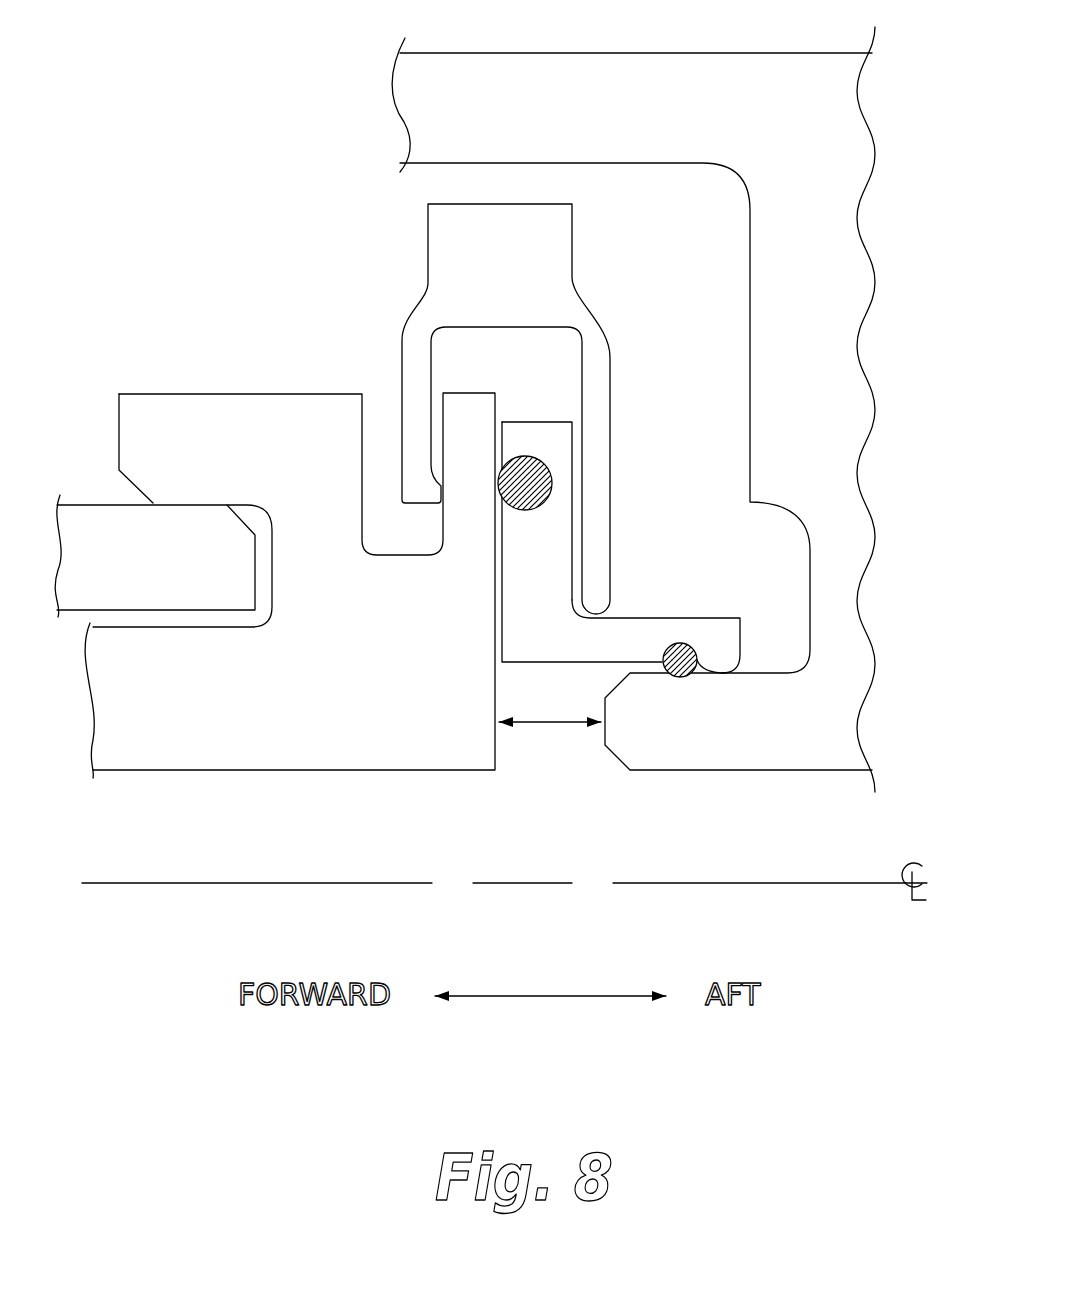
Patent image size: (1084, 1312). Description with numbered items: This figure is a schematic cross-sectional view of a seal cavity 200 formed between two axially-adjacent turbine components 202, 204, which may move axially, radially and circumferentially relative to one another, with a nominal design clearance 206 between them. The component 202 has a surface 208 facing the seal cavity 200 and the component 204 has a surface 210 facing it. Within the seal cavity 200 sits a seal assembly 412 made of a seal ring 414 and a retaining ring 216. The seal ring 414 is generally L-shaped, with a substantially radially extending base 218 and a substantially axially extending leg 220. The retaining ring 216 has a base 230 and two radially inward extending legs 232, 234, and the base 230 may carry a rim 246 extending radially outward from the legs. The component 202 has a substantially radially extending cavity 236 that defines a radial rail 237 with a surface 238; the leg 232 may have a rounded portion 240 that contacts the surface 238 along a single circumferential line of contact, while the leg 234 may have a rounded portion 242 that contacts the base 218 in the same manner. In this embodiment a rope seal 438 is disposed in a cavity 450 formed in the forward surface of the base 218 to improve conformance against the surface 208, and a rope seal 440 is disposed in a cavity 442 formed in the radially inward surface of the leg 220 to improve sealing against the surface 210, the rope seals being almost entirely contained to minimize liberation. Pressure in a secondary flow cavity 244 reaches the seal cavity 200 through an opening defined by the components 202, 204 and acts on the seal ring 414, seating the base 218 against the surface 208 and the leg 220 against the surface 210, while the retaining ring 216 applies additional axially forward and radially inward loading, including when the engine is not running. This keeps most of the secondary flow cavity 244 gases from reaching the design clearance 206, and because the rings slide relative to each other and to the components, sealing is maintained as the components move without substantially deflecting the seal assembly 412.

The seal cavity 200 is at (188, 123).
The turbine component 202 is at (218, 771).
The turbine component 204 is at (823, 771).
The nominal design clearance 206 is at (550, 725).
The surface 208 is at (500, 760).
The surface 210 is at (782, 670).
The retaining ring 216 is at (408, 296).
The base 218 is at (507, 613).
The leg 220 is at (690, 617).
The base 230 is at (480, 328).
The leg 232 is at (400, 368).
The leg 234 is at (594, 400).
The cavity 236 is at (380, 402).
The radial rail 237 is at (458, 393).
The surface 238 is at (442, 524).
The rounded portion 240 is at (441, 481).
The rounded portion 242 is at (573, 587).
The secondary flow cavity 244 is at (300, 34).
The rim 246 is at (421, 280).
The seal assembly 412 is at (702, 443).
The seal ring 414 is at (642, 608).
The rope seal 438 is at (492, 508).
The rope seal 440 is at (684, 680).
The cavity 442 is at (655, 680).
The cavity 450 is at (497, 483).